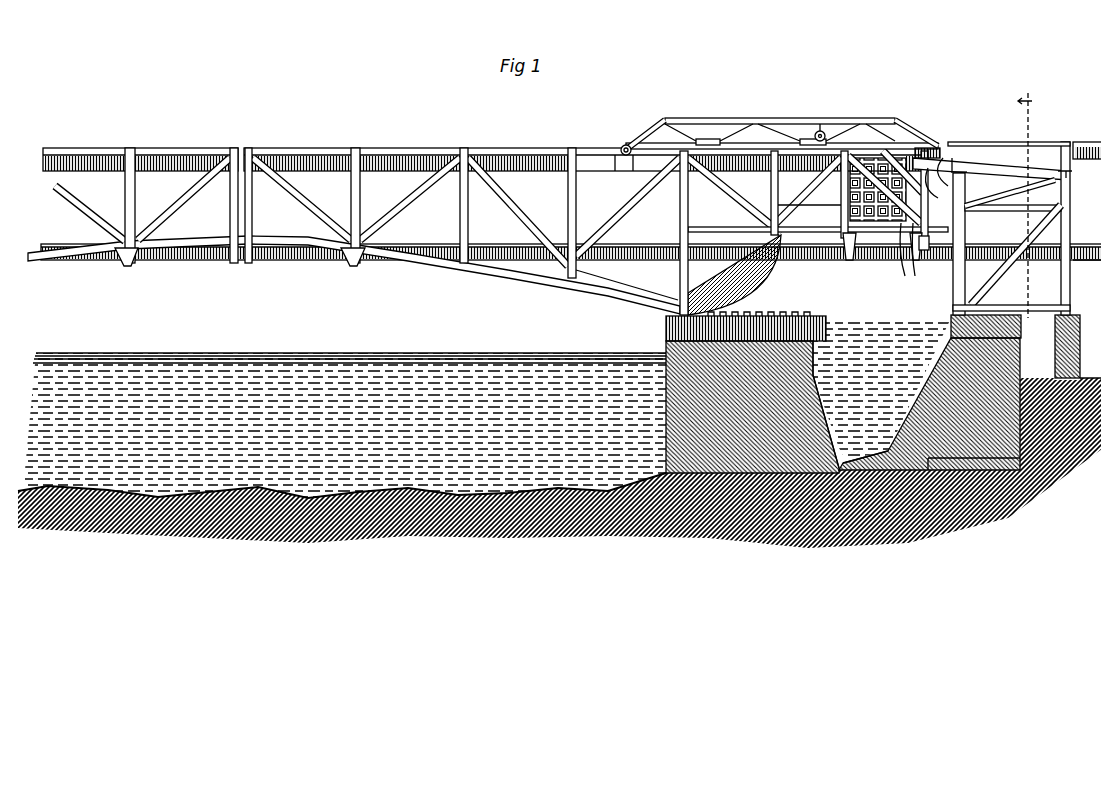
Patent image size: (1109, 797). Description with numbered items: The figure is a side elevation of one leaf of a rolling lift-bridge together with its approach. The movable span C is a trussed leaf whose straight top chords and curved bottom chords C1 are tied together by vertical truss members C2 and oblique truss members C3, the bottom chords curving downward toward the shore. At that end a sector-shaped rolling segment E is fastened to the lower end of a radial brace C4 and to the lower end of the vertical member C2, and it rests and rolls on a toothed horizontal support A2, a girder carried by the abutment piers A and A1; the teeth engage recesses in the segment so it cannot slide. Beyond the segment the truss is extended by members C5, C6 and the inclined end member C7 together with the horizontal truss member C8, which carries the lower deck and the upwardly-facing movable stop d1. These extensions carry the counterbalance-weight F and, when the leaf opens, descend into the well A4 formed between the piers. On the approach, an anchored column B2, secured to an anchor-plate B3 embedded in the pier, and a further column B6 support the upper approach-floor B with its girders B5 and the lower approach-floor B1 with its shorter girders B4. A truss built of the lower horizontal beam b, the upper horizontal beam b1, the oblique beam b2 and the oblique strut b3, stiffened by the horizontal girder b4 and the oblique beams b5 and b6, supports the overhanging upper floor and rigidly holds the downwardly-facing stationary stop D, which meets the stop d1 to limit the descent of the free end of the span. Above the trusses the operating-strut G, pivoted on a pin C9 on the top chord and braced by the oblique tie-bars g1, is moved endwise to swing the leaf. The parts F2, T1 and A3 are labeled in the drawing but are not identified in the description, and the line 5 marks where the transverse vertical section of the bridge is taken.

The movable span C is at (302, 124).
The curved bottom chord C1 is at (382, 147).
The vertical truss member C2 is at (343, 186).
The oblique truss member C3 is at (400, 190).
The radial brace C4 is at (735, 192).
The truss extension member C5 is at (790, 196).
The truss extension member C6 is at (835, 205).
The inclined end truss member C7 is at (862, 140).
The horizontal truss member C8 is at (876, 224).
The pivot pin C9 is at (614, 137).
The stationary stop D is at (878, 189).
The rolling segment E is at (750, 280).
The counterbalance-weight F is at (990, 166).
The rope F2 is at (906, 259).
The operating-strut G is at (786, 117).
The oblique brace g1 is at (700, 126).
The sheave T1 is at (818, 124).
The abutment pier A is at (926, 358).
The abutment pier A1 is at (808, 383).
The horizontal support A2 is at (816, 309).
The rack A3 is at (818, 326).
The well A4 is at (487, 408).
The upper approach-floor B is at (1075, 134).
The lower approach-floor B1 is at (1075, 252).
The anchored column B2 is at (960, 278).
The anchor-plate B3 is at (559, 431).
The lower approach girder B4 is at (1099, 201).
The upper approach girder B5 is at (1088, 170).
The approach column B6 is at (1062, 282).
The lower horizontal beam b is at (957, 189).
The upper horizontal beam b1 is at (1000, 134).
The oblique beam b2 is at (936, 148).
The oblique strut b3 is at (902, 152).
The horizontal girder b4 is at (1013, 195).
The oblique beam b5 is at (1023, 223).
The oblique beam b6 is at (1062, 178).
The movable stop d1 is at (915, 250).
The section line 5 is at (1026, 202).